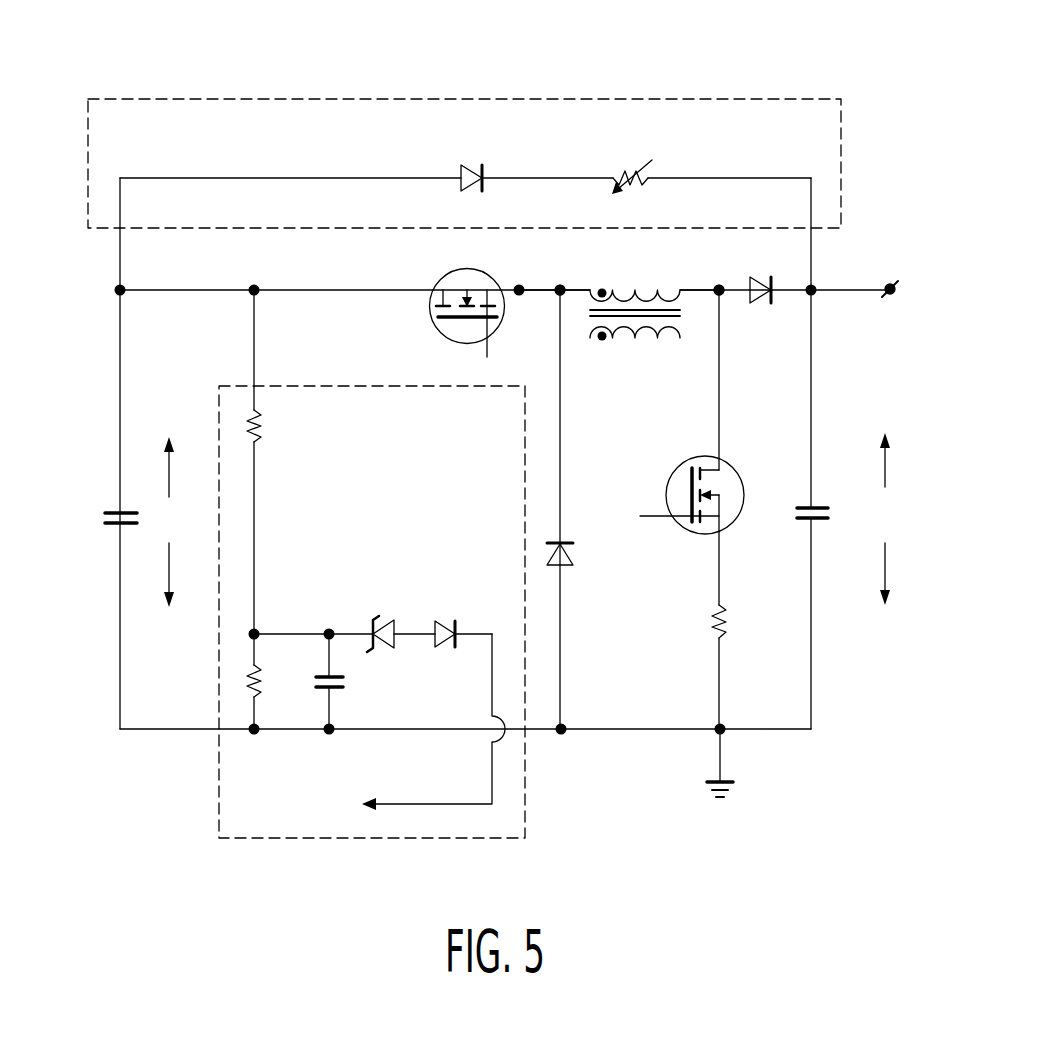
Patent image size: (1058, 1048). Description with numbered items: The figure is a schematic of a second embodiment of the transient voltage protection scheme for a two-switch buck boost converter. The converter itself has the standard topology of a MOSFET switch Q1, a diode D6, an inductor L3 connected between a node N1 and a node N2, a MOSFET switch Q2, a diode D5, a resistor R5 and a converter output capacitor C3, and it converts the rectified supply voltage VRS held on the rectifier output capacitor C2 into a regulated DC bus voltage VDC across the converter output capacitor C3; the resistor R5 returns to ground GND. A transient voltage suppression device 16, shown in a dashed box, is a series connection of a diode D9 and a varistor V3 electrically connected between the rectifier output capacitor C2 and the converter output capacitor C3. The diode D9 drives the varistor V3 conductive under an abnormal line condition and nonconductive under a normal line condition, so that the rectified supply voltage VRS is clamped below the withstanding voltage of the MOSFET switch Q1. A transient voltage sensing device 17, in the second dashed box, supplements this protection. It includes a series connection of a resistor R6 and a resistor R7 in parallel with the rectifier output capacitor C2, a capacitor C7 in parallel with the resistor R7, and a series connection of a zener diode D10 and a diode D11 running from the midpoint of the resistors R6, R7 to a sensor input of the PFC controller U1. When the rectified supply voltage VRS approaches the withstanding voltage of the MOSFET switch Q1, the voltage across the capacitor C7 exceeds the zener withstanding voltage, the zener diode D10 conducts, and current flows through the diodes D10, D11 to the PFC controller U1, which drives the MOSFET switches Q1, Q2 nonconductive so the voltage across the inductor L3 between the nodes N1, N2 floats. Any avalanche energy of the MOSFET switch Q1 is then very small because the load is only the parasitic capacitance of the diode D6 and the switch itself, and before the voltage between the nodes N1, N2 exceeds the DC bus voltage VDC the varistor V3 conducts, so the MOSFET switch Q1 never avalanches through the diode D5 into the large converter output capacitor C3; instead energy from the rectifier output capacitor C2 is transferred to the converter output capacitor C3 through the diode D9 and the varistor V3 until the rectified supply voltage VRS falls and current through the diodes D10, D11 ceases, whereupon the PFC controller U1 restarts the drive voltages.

The transient voltage suppression device 16 is at (464, 120).
The transient voltage sensing device 17 is at (334, 564).
The diode D9 is at (461, 162).
The varistor V3 is at (632, 163).
The MOSFET switch Q1 is at (467, 300).
The node N1 is at (561, 275).
The inductor L3 is at (619, 300).
The node N2 is at (719, 274).
The diode D5 is at (763, 308).
The MOSFET switch Q2 is at (692, 447).
The rectifier output capacitor C2 is at (103, 521).
The converter output capacitor C3 is at (792, 518).
The resistor R5 is at (737, 667).
The resistor R6 is at (271, 426).
The resistor R7 is at (271, 681).
The capacitor C7 is at (347, 681).
The diode D6 is at (580, 555).
The zener diode D10 is at (382, 618).
The diode D11 is at (446, 615).
The PFC controller U1 is at (415, 725).
The ground GND is at (722, 779).
The rectified supply voltage VRS is at (164, 522).
The DC bus voltage VDC is at (876, 519).